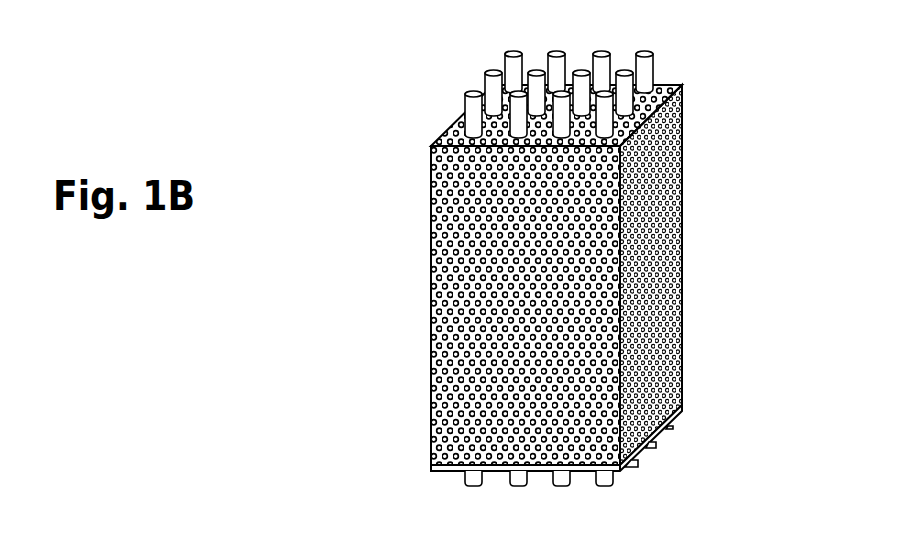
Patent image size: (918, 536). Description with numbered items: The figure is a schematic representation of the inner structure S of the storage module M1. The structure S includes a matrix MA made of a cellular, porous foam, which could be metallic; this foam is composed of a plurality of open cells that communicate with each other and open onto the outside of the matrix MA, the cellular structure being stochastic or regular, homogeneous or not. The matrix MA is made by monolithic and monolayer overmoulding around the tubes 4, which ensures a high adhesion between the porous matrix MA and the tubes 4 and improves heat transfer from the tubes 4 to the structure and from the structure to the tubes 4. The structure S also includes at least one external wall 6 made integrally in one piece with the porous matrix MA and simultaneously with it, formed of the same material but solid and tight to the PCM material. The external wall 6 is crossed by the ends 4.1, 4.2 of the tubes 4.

The end of the tube 4.1 is at (592, 55).
The tubes 4 is at (623, 260).
The end of the tube 4.2 is at (610, 466).
The structure S is at (406, 116).
The module M1 is at (559, 260).
The matrix MA is at (668, 168).
The external wall 6 is at (665, 417).